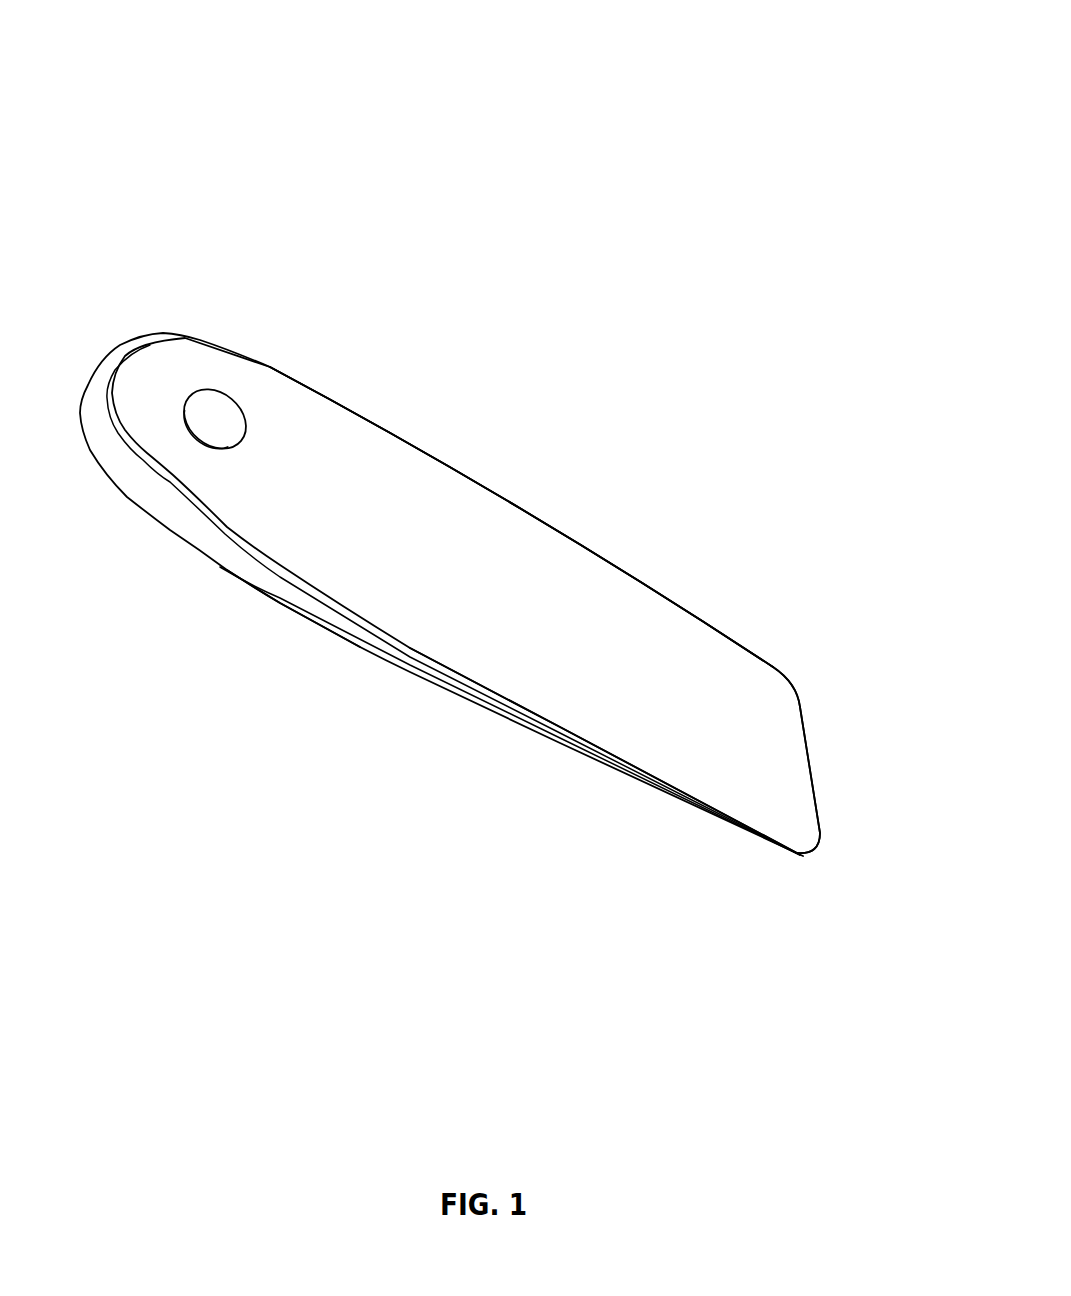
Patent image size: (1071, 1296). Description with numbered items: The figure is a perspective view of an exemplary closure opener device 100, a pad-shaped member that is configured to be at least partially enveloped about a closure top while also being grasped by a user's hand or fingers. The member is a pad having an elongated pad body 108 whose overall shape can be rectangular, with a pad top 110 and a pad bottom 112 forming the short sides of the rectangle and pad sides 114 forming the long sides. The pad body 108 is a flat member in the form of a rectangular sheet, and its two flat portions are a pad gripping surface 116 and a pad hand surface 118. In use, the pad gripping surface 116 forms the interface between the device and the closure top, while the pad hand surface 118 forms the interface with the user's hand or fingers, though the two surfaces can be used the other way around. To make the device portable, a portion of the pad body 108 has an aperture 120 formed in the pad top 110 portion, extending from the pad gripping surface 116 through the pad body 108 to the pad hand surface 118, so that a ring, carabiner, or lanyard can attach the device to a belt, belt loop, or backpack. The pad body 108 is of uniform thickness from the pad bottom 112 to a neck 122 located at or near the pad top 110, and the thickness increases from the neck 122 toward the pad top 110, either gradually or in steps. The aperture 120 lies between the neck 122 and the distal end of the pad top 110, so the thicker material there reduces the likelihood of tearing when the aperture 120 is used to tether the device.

The closure opener device 100 is at (704, 131).
The pad body 108 is at (676, 662).
The pad top 110 is at (107, 360).
The pad bottom 112 is at (805, 718).
The pad sides 114 is at (585, 545).
The pad gripping surface 116 is at (387, 572).
The pad hand surface 118 is at (458, 695).
The aperture 120 is at (208, 420).
The neck 122 is at (302, 615).